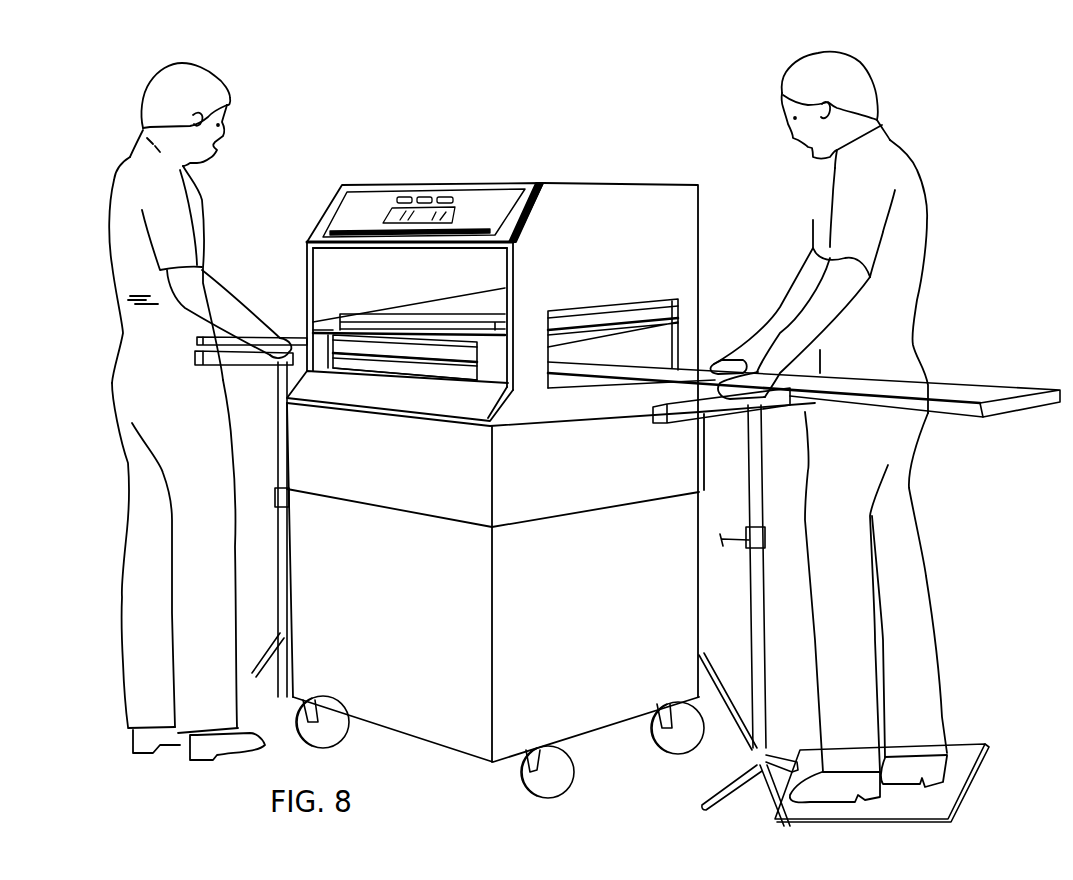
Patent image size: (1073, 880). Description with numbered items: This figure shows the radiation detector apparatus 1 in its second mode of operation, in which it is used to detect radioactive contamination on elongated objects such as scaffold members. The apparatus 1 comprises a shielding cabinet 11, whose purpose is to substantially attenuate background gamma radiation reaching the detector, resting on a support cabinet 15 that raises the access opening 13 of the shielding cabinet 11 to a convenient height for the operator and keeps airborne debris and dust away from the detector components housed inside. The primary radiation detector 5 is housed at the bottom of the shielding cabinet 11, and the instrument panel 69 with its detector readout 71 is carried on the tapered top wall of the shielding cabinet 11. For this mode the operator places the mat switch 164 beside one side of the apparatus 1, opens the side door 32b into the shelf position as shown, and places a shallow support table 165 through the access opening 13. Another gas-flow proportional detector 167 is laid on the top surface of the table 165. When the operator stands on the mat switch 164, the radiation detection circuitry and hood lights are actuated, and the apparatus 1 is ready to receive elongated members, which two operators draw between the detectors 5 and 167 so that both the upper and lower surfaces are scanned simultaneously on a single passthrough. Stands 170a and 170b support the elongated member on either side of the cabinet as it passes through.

The radiation detector apparatus 1 is at (329, 128).
The primary radiation detector 5 is at (412, 372).
The shielding cabinet 11 is at (501, 420).
The access opening 13 is at (376, 356).
The support cabinet 15 is at (405, 742).
The side door 32b is at (580, 383).
The instrument panel 69 is at (353, 205).
The detector readout 71 is at (456, 217).
The mat switch 164 is at (972, 778).
The shallow support table 165 is at (313, 333).
The gas-flow proportional detector 167 is at (430, 306).
The infeed stand 170a is at (276, 378).
The outfeed stand 170b is at (754, 462).